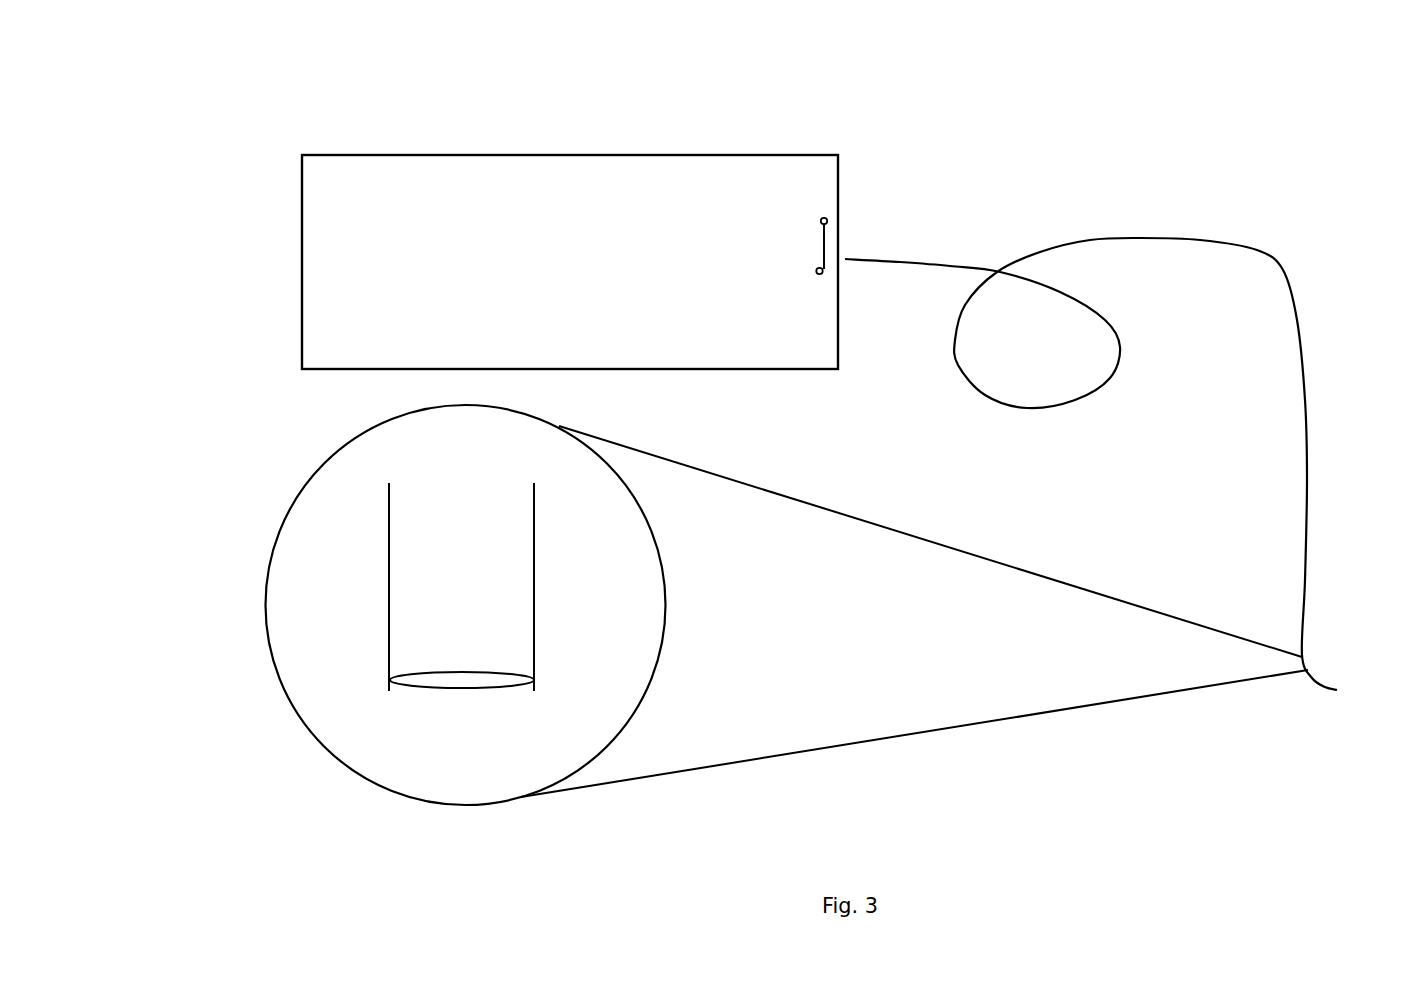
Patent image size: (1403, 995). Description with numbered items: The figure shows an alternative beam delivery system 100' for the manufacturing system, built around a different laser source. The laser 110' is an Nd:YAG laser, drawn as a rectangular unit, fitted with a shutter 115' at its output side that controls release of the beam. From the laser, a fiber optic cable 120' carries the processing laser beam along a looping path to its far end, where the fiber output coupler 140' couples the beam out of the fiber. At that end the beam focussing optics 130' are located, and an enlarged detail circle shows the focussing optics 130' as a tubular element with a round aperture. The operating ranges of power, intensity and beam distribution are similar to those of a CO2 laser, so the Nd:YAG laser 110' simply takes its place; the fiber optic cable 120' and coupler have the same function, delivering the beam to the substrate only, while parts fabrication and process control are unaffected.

The beam delivery system 100' is at (826, 419).
The laser 110' is at (570, 262).
The shutter 115' is at (782, 259).
The fiber optic cable 120' is at (1076, 420).
The beam focussing optics 130' is at (819, 605).
The fiber output coupler 140' is at (1345, 673).